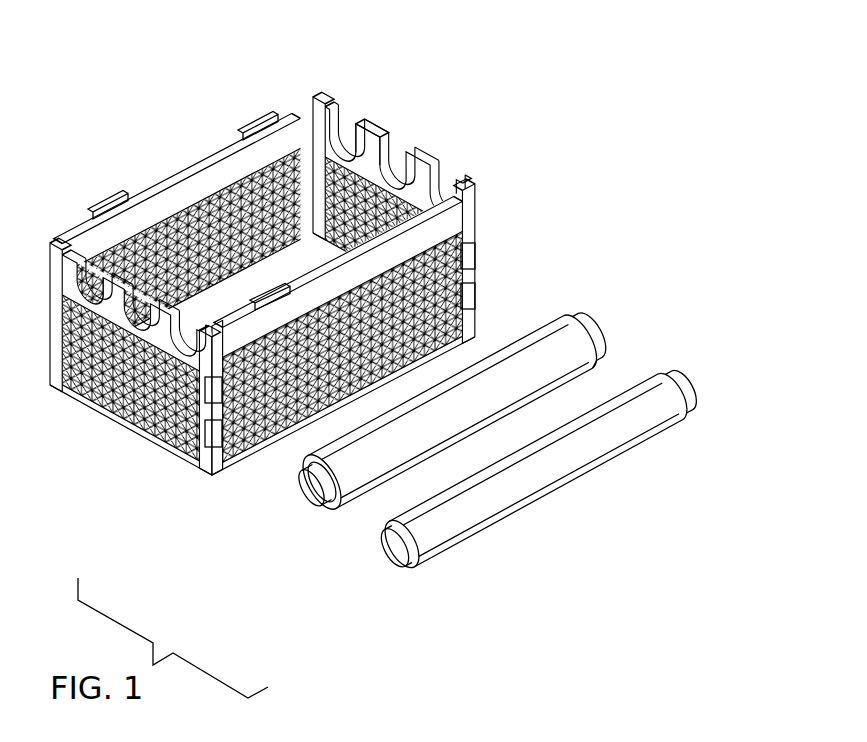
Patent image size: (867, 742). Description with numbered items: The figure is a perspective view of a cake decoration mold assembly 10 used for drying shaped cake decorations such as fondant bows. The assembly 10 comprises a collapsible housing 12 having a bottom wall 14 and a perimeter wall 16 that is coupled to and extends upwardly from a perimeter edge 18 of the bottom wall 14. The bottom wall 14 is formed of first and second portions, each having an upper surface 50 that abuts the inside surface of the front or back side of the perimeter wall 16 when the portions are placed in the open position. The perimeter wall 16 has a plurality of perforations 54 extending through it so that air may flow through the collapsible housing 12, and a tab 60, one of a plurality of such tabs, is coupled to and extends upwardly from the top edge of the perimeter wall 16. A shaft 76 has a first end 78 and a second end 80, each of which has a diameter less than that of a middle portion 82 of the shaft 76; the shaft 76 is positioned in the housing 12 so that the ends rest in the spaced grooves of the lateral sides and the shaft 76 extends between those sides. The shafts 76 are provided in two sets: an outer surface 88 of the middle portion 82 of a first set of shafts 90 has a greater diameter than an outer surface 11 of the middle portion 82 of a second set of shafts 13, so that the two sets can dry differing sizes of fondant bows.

The cake decoration mold assembly 10 is at (340, 256).
The outer surface 11 is at (508, 482).
The collapsible housing 12 is at (345, 110).
The second set of shafts 13 is at (683, 408).
The bottom wall 14 is at (215, 315).
The perimeter wall 16 is at (145, 212).
The perimeter edge 18 is at (406, 154).
The upper surface 50 is at (264, 286).
The perforations 54 is at (120, 402).
The tab 60 is at (95, 247).
The shaft 76 is at (505, 415).
The first end 78 is at (590, 322).
The second end 80 is at (315, 507).
The middle portion 82 is at (546, 333).
The outer surface 88 is at (376, 453).
The first set of shafts 90 is at (595, 361).